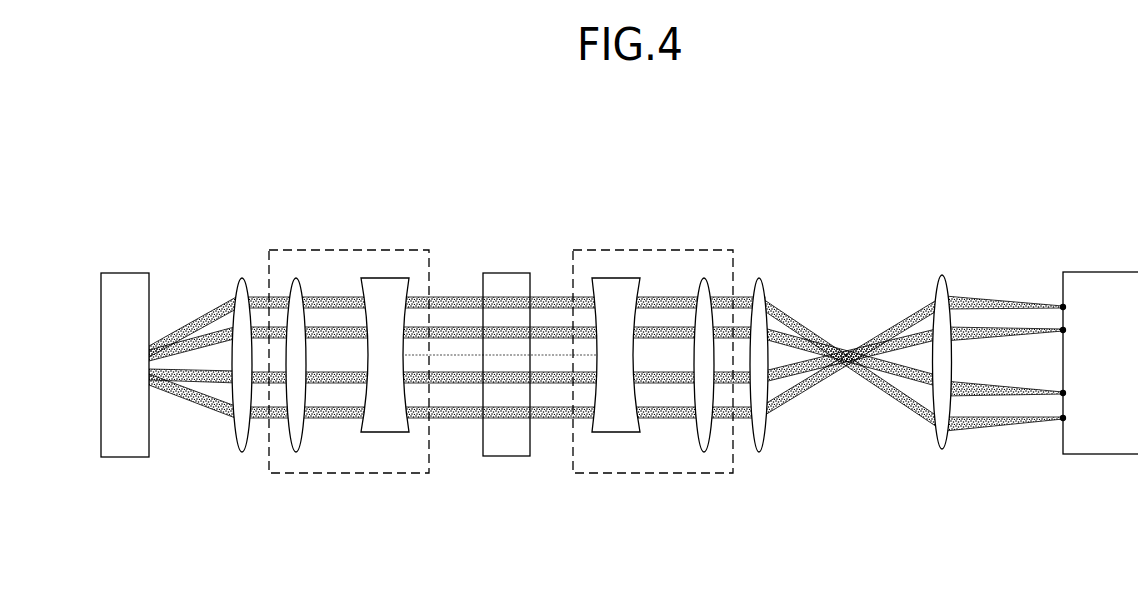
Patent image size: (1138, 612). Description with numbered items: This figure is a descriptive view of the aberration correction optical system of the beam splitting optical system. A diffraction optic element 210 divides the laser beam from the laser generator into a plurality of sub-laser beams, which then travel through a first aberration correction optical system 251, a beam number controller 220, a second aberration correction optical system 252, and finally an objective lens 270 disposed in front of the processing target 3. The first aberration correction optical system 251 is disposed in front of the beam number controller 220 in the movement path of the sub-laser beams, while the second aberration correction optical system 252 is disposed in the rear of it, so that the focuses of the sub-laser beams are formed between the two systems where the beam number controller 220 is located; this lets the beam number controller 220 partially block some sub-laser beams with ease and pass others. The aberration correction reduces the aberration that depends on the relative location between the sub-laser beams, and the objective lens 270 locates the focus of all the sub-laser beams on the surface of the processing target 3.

The diffraction optic element 210 is at (124, 273).
The first aberration correction optical system 251 is at (340, 250).
The beam number controller 220 is at (505, 273).
The second aberration correction optical system 252 is at (660, 250).
The objective lens 270 is at (942, 275).
The processing target 3 is at (1110, 272).